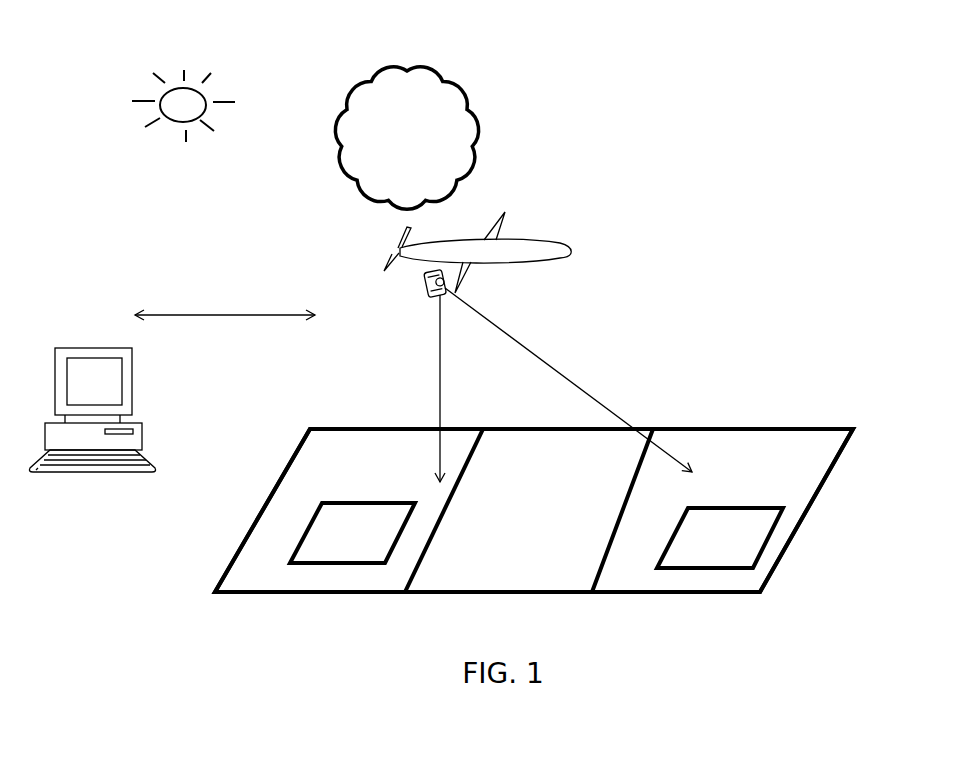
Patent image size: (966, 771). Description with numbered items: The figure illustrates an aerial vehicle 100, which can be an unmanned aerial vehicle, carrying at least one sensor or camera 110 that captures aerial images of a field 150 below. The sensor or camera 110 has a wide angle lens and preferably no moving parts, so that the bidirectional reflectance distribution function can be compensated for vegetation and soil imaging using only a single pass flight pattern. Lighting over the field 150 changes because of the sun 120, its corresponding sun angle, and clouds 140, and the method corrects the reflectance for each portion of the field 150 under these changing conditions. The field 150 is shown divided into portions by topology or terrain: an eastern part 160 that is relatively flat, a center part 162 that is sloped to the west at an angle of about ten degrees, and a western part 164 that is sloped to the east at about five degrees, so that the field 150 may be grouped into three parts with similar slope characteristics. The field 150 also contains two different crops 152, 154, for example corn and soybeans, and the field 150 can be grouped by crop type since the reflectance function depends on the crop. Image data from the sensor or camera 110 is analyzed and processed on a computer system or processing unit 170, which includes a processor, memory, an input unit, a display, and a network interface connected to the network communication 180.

The aerial vehicle 100 is at (620, 195).
The sensor or camera 110 is at (420, 293).
The sun 120 is at (236, 78).
The clouds 140 is at (493, 86).
The field 150 is at (678, 410).
The crop 152 is at (322, 532).
The crop 154 is at (742, 543).
The eastern portion of field 160 is at (320, 455).
The center portion of field 162 is at (529, 510).
The western portion of field 164 is at (805, 463).
The computer system or processing unit 170 is at (92, 340).
The network communication 180 is at (216, 313).